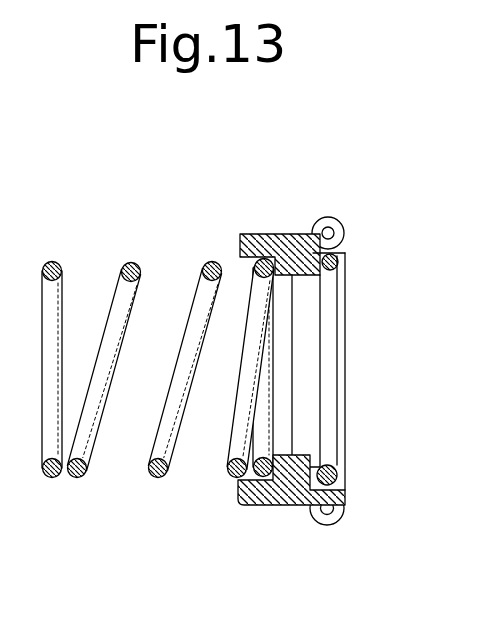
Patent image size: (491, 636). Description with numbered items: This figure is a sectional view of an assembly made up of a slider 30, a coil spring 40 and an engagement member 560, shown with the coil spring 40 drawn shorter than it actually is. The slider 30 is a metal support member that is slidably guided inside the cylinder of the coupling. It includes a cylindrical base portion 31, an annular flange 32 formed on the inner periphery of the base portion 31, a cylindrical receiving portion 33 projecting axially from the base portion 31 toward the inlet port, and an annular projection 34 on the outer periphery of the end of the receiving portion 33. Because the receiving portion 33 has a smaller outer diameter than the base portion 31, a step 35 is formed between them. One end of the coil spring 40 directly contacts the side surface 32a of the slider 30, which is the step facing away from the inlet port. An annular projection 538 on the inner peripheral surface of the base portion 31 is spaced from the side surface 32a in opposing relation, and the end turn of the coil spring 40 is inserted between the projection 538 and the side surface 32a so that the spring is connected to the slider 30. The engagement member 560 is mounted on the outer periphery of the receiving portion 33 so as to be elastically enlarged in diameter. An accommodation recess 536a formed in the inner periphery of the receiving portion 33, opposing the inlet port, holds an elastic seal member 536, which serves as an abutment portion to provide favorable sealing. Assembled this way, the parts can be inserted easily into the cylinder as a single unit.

The slider 30 is at (282, 226).
The cylindrical base portion 31 is at (255, 233).
The annular flange 32 is at (273, 273).
The side surface 32a is at (255, 278).
The cylindrical receiving portion 33 is at (347, 234).
The annular projection 34 is at (340, 246).
The step 35 is at (314, 233).
The coil spring 40 is at (130, 262).
The seal member 536 is at (323, 466).
The accommodation recess 536a is at (335, 475).
The annular projection 538 is at (243, 267).
The engagement member 560 is at (343, 238).